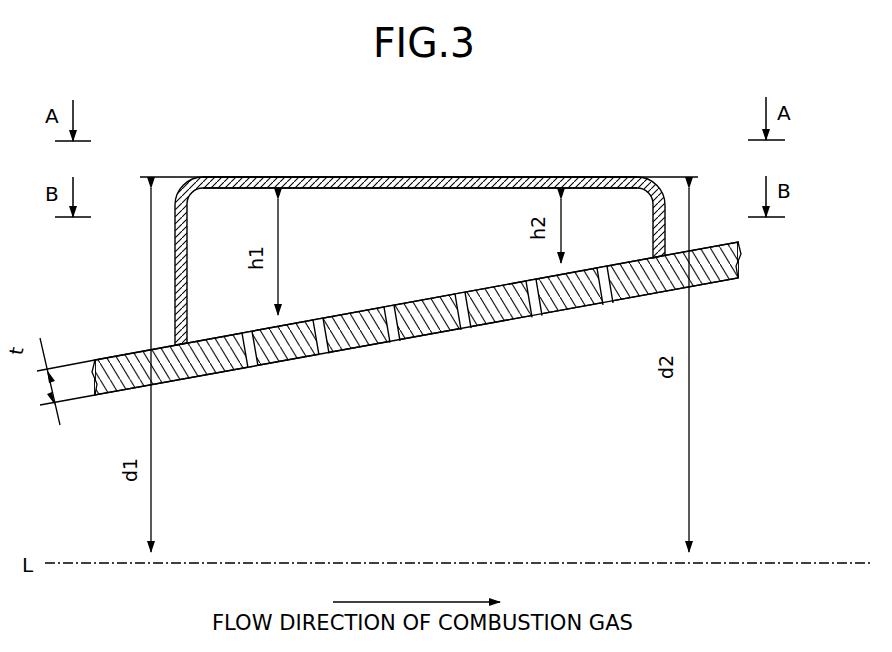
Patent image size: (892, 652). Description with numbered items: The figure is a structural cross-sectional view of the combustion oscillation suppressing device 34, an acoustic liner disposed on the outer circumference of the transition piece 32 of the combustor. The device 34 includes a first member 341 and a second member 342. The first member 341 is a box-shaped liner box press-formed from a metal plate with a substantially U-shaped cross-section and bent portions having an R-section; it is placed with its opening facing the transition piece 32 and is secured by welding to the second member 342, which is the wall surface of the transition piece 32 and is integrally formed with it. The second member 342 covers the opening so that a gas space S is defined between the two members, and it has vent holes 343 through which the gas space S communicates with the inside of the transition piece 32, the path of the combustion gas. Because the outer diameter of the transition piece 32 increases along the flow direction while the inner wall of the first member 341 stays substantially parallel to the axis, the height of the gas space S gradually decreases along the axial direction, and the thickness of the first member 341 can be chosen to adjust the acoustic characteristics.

The transition piece 32 is at (416, 335).
The combustion oscillation suppressing device 34 is at (636, 158).
The first member 341 is at (541, 177).
The second member 342 is at (348, 314).
The vent holes 343 is at (251, 370).
The gas space S is at (497, 198).